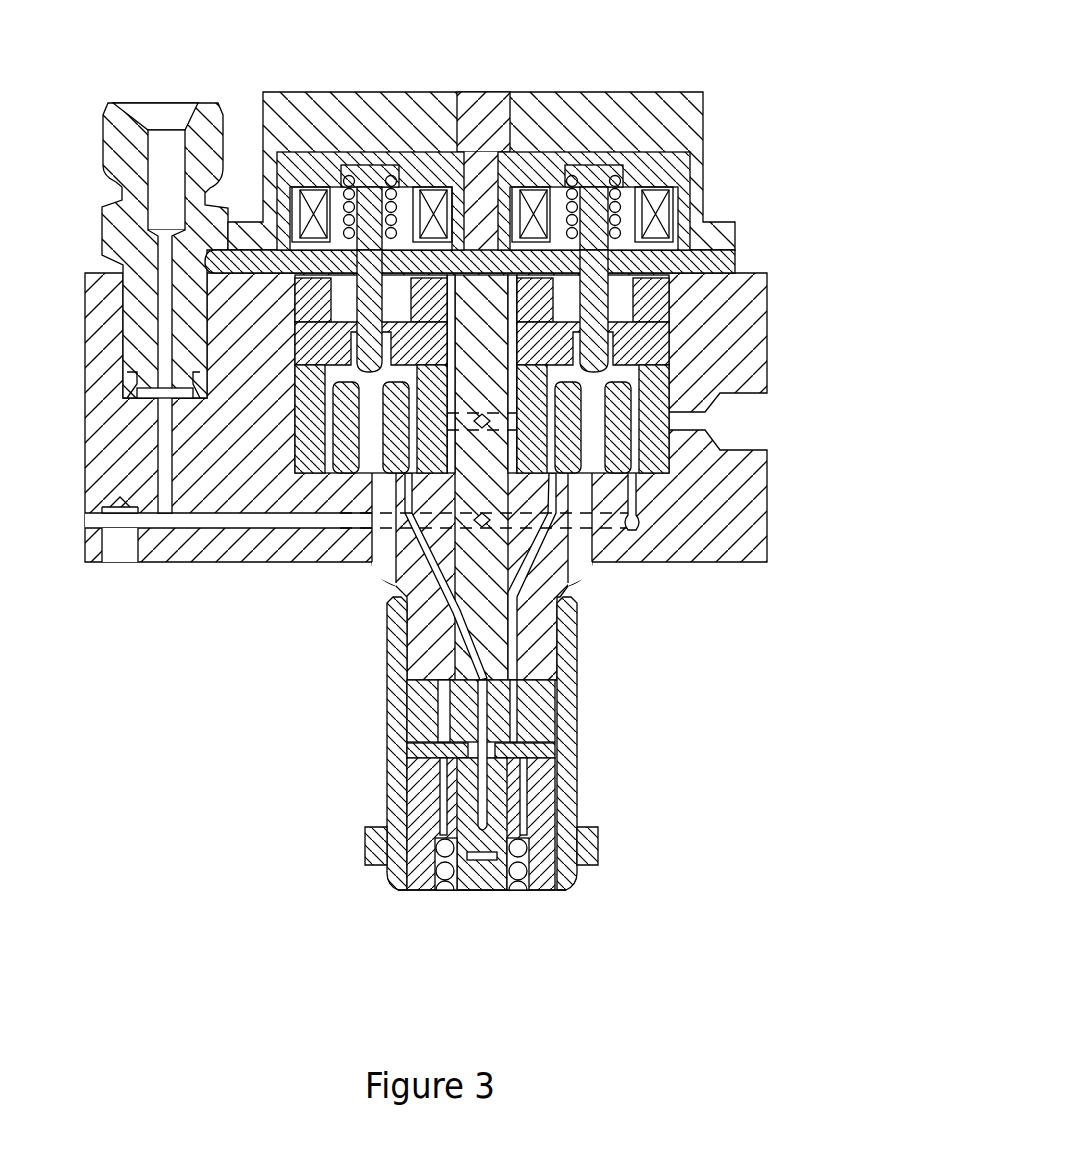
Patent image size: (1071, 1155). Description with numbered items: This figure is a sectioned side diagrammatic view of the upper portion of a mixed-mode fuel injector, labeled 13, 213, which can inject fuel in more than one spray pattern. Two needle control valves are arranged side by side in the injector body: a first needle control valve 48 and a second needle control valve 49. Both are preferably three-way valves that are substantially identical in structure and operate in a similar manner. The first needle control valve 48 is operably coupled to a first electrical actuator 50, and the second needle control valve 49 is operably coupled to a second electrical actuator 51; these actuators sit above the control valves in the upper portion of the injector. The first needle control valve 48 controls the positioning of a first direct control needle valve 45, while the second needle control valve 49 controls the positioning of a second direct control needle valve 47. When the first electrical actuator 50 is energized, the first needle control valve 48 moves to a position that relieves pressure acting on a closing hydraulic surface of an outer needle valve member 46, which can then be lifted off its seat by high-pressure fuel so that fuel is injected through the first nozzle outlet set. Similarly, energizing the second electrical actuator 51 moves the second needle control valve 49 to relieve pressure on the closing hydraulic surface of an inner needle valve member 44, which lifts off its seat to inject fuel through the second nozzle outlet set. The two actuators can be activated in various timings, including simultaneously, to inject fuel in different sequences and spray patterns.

The valve assembly 13 is at (432, 456).
The valve assembly 213 is at (490, 153).
The second electrical actuator 51 is at (427, 160).
The first electrical actuator 50 is at (643, 166).
The second needle control valve 49 is at (303, 341).
The first needle control valve 48 is at (656, 316).
The second direct control needle valve 47 is at (437, 793).
The outer needle valve member 46 is at (444, 835).
The inner needle valve member 44 is at (500, 835).
The first direct control needle valve 45 is at (508, 845).